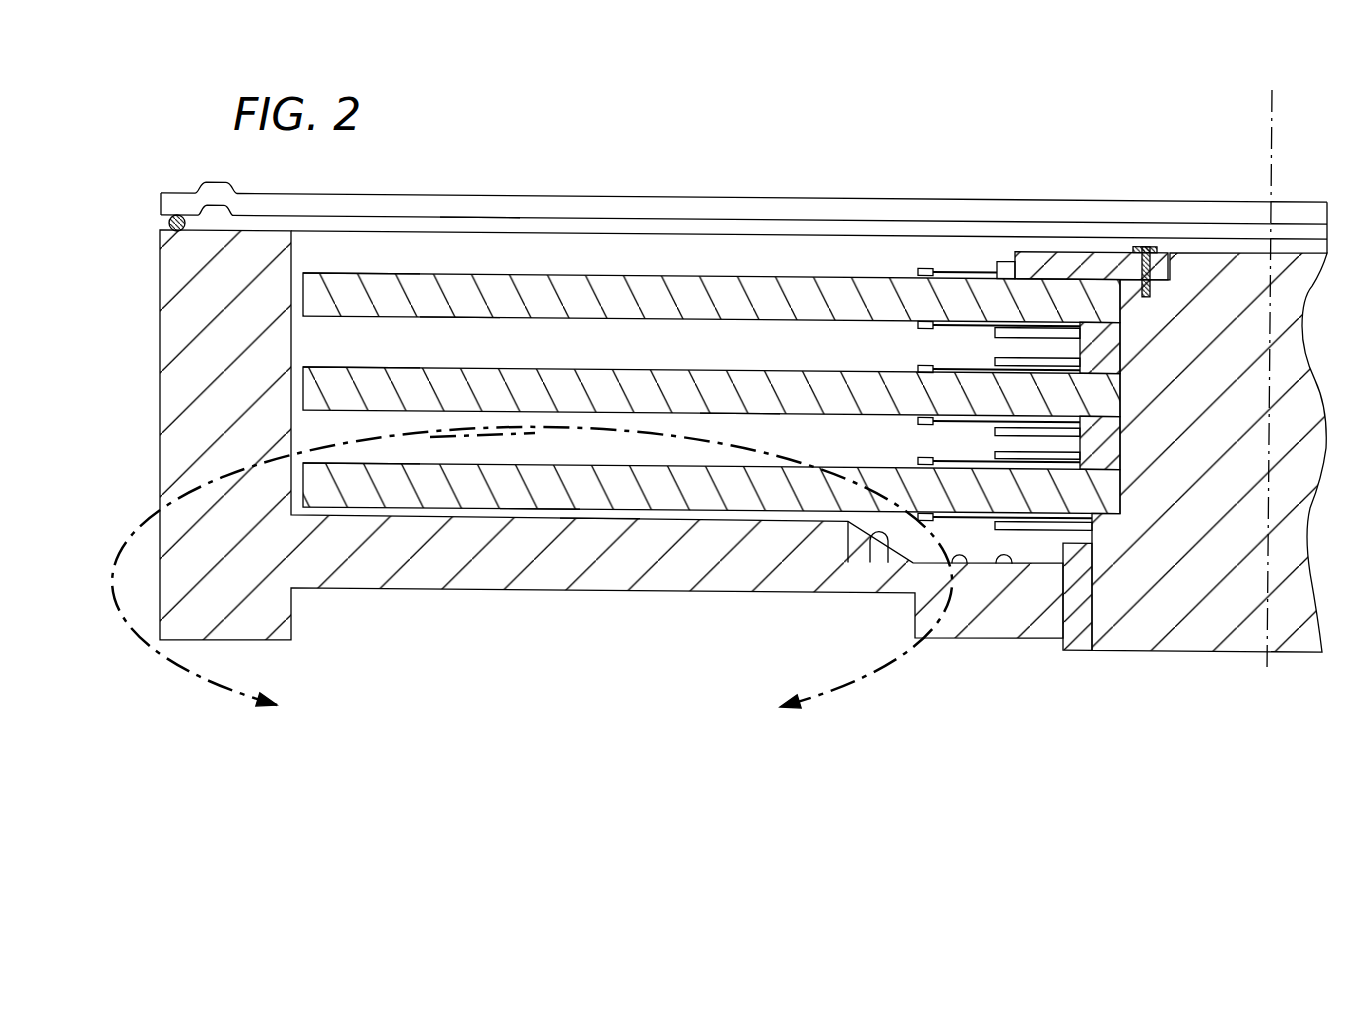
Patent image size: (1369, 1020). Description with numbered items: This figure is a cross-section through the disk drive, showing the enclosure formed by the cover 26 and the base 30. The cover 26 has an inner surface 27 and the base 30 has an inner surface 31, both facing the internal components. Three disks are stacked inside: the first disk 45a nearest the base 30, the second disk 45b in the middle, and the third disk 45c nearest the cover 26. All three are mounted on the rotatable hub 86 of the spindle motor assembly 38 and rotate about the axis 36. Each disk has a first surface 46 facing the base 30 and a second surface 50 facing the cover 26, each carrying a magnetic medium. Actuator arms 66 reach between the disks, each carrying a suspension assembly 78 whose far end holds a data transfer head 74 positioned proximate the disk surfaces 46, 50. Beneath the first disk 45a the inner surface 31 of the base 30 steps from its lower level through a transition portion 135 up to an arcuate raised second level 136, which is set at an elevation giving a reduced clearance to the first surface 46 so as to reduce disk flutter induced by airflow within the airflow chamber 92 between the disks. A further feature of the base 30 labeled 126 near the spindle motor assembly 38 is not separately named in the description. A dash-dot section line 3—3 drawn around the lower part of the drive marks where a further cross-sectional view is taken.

The cover 26 is at (752, 195).
The inner surface of cover 27 is at (479, 217).
The base 30 is at (187, 540).
The inner surface of base 31 is at (965, 565).
The axis 36 is at (1272, 112).
The spindle motor assembly 38 is at (1073, 633).
The first disk 45a is at (303, 480).
The second disk 45b is at (303, 387).
The third disk 45c is at (303, 292).
The first surface 46 is at (455, 318).
The second surface 50 is at (380, 272).
The actuator arm 66 is at (1030, 333).
The data transfer head 74 is at (918, 367).
The suspension assembly 78 is at (994, 362).
The rotatable hub 86 is at (1287, 262).
The airflow chamber 92 is at (458, 422).
The passage 126 is at (997, 565).
The transition portion 135 is at (880, 535).
The second level 136 is at (586, 515).
The section line 3- 3 is at (532, 579).